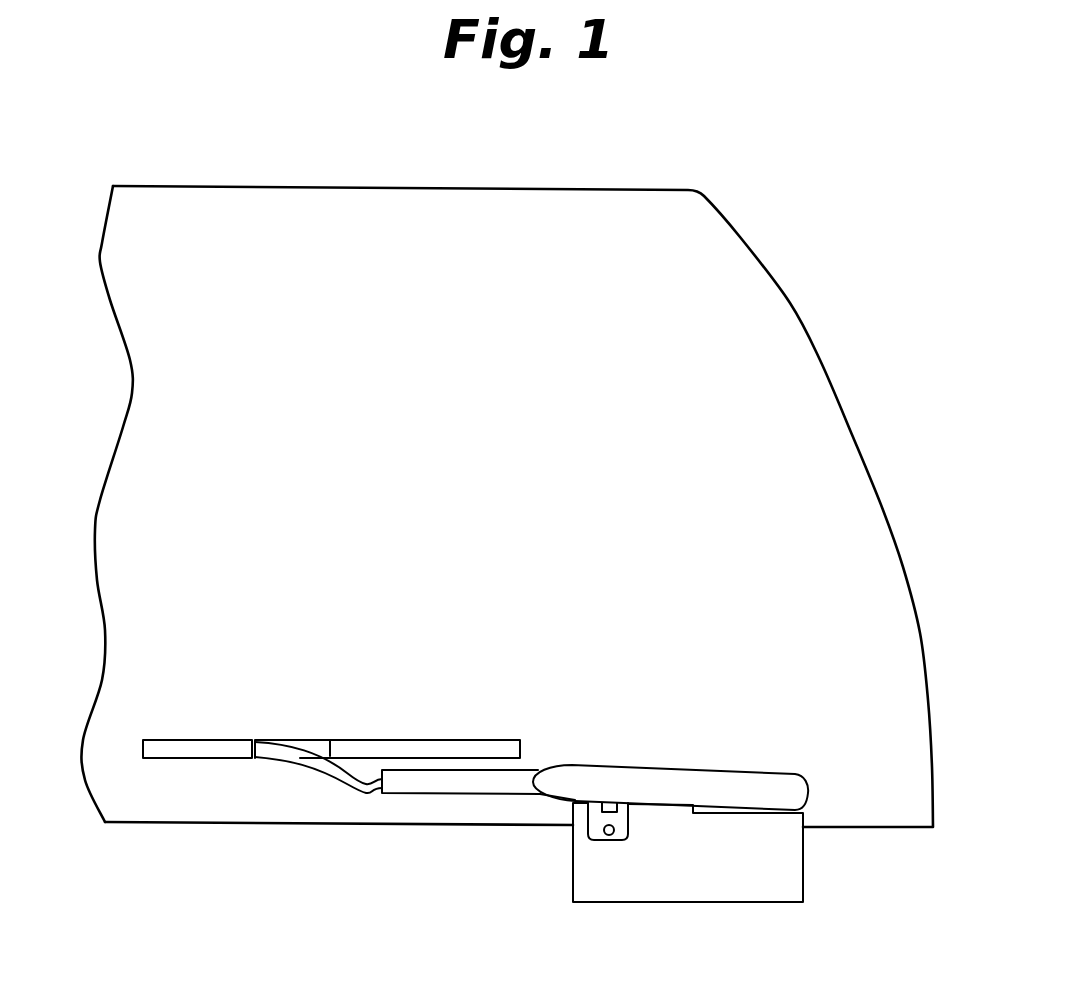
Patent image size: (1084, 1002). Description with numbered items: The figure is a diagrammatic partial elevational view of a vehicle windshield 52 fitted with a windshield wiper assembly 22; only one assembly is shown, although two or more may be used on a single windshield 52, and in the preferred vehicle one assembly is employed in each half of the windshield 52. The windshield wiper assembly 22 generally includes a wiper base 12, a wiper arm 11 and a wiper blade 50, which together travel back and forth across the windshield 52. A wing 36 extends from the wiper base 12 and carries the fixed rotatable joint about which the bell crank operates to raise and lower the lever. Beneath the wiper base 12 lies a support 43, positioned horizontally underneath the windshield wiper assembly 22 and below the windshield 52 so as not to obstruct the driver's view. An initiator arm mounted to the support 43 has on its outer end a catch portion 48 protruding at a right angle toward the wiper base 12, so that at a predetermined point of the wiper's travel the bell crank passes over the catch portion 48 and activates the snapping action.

The windshield 52 is at (798, 373).
The wiper blade 50 is at (205, 759).
The windshield wiper assembly 22 is at (490, 867).
The wiper arm 11 is at (453, 795).
The wiper base 12 is at (563, 800).
The support 43 is at (645, 903).
The catch portion 48 is at (610, 842).
The wing 36 is at (617, 807).